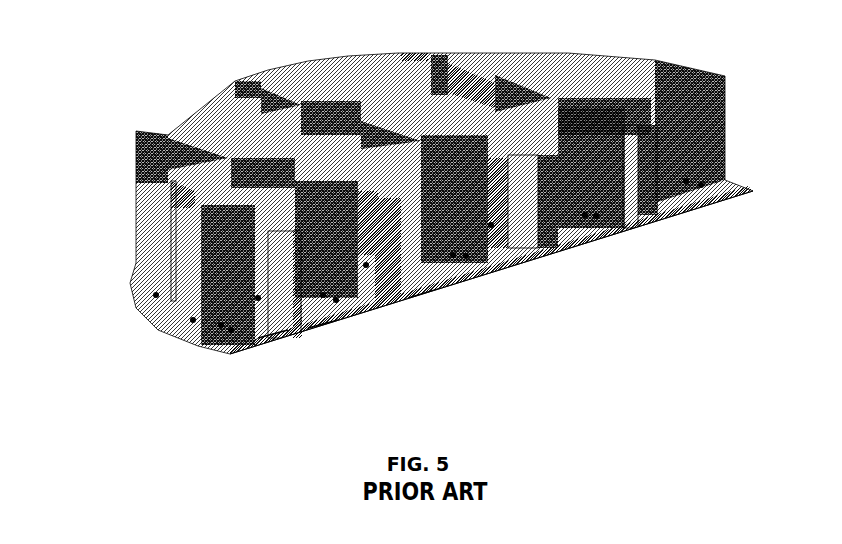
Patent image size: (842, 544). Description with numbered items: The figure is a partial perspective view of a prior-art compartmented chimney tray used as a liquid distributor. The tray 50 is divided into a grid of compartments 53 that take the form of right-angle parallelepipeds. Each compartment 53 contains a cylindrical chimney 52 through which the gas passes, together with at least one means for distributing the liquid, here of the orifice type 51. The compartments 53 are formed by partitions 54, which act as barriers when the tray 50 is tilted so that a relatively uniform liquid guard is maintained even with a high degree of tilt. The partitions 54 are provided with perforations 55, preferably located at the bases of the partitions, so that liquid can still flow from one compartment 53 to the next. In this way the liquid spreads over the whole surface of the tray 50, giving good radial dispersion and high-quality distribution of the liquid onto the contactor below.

The liquid distributor tray 50 is at (205, 333).
The orifice 51 is at (314, 302).
The cylindrical chimney 52 is at (291, 290).
The compartment 53 is at (547, 103).
The partition 54 is at (580, 168).
The perforation 55 is at (580, 170).